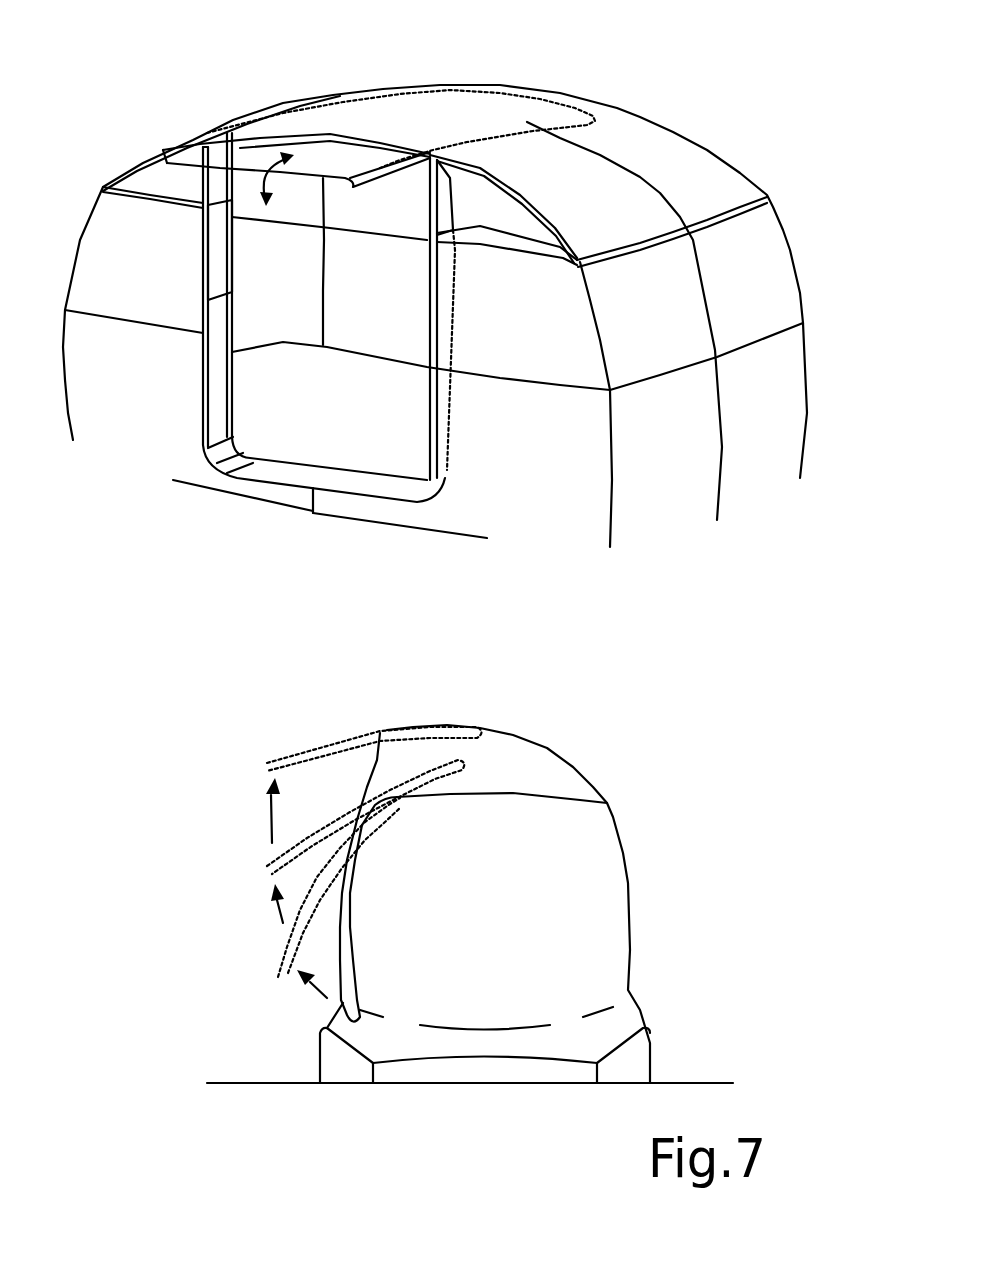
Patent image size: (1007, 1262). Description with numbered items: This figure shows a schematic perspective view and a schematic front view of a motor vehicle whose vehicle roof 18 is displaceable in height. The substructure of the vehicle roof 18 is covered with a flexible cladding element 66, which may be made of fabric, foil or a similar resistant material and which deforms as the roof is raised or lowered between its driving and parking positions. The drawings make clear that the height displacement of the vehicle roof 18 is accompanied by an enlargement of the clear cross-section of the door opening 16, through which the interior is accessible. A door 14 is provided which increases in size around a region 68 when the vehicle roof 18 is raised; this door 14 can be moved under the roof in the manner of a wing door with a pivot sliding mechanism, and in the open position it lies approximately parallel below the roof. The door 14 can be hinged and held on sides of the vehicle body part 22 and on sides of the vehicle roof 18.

The door 14 is at (325, 155).
The door opening 16 is at (300, 433).
The vehicle roof 18 is at (580, 58).
The vehicle body part 22 is at (765, 277).
The flexible cladding element 66 is at (663, 152).
The region 68 is at (378, 764).